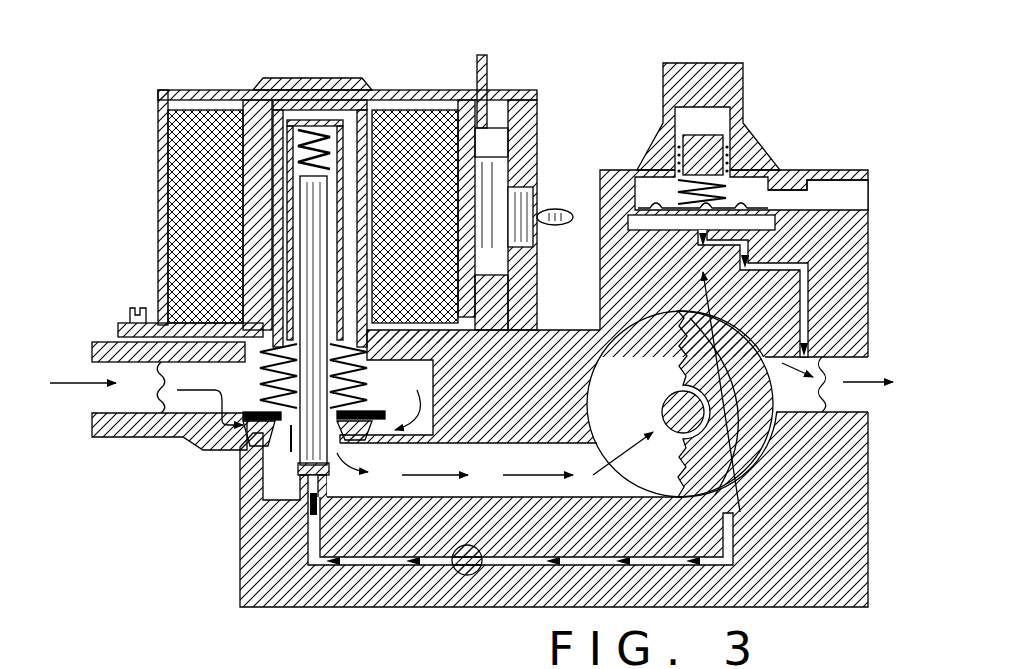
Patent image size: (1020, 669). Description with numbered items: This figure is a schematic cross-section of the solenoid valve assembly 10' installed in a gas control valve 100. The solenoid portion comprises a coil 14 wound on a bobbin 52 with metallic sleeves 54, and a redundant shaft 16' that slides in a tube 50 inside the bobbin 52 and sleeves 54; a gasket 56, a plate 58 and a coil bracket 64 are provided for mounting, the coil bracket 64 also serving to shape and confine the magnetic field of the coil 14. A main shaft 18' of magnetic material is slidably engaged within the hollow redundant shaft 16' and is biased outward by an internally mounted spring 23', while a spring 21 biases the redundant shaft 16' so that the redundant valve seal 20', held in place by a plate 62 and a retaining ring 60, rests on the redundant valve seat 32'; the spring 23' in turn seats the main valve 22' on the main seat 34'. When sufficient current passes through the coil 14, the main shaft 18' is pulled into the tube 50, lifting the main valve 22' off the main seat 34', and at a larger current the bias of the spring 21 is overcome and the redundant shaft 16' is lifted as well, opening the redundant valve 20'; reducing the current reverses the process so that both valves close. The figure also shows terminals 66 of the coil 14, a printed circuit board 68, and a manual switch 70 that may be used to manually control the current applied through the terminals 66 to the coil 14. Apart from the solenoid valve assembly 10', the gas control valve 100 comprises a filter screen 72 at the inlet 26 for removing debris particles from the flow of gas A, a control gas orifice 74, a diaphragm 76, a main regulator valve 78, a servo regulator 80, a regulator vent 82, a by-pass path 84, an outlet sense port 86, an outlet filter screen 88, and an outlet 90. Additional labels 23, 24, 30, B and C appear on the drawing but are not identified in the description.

The solenoid valve assembly 10' is at (309, 31).
The coil 14 is at (443, 100).
The redundant shaft 16' is at (347, 66).
The main shaft 18' is at (415, 179).
The redundant valve seal 20' is at (226, 365).
The spring 21 is at (430, 320).
The main valve 22' is at (244, 554).
The flow path 23 is at (524, 433).
The spring 23' is at (318, 216).
The valve housing body 24 is at (801, 583).
The inlet 26 is at (107, 398).
The passage 30 is at (318, 523).
The redundant valve seat 32' is at (232, 530).
The main seat 34' is at (301, 540).
The tube 50 is at (287, 112).
The bobbin 52 is at (180, 90).
The metallic sleeves 54 is at (215, 135).
The gasket 56 is at (122, 340).
The plate 58 is at (103, 347).
The retaining ring 60 is at (268, 413).
The plate 62 is at (197, 403).
The coil bracket 64 is at (190, 193).
The terminals 66 is at (481, 52).
The printed circuit board 68 is at (478, 140).
The manual switch 70 is at (555, 208).
The filter screen 72 is at (157, 397).
The control gas orifice 74 is at (480, 574).
The diaphragm 76 is at (732, 516).
The main regulator valve 78 is at (740, 433).
The servo regulator 80 is at (753, 140).
The regulator vent 82 is at (853, 188).
The by-pass path 84 is at (840, 237).
The outlet sense port 86 is at (835, 298).
The outlet filter screen 88 is at (827, 357).
The outlet 90 is at (850, 402).
The gas control valve 100 is at (782, 88).
The flow of gas A is at (77, 383).
The flow point B is at (363, 460).
The flow point C is at (291, 572).